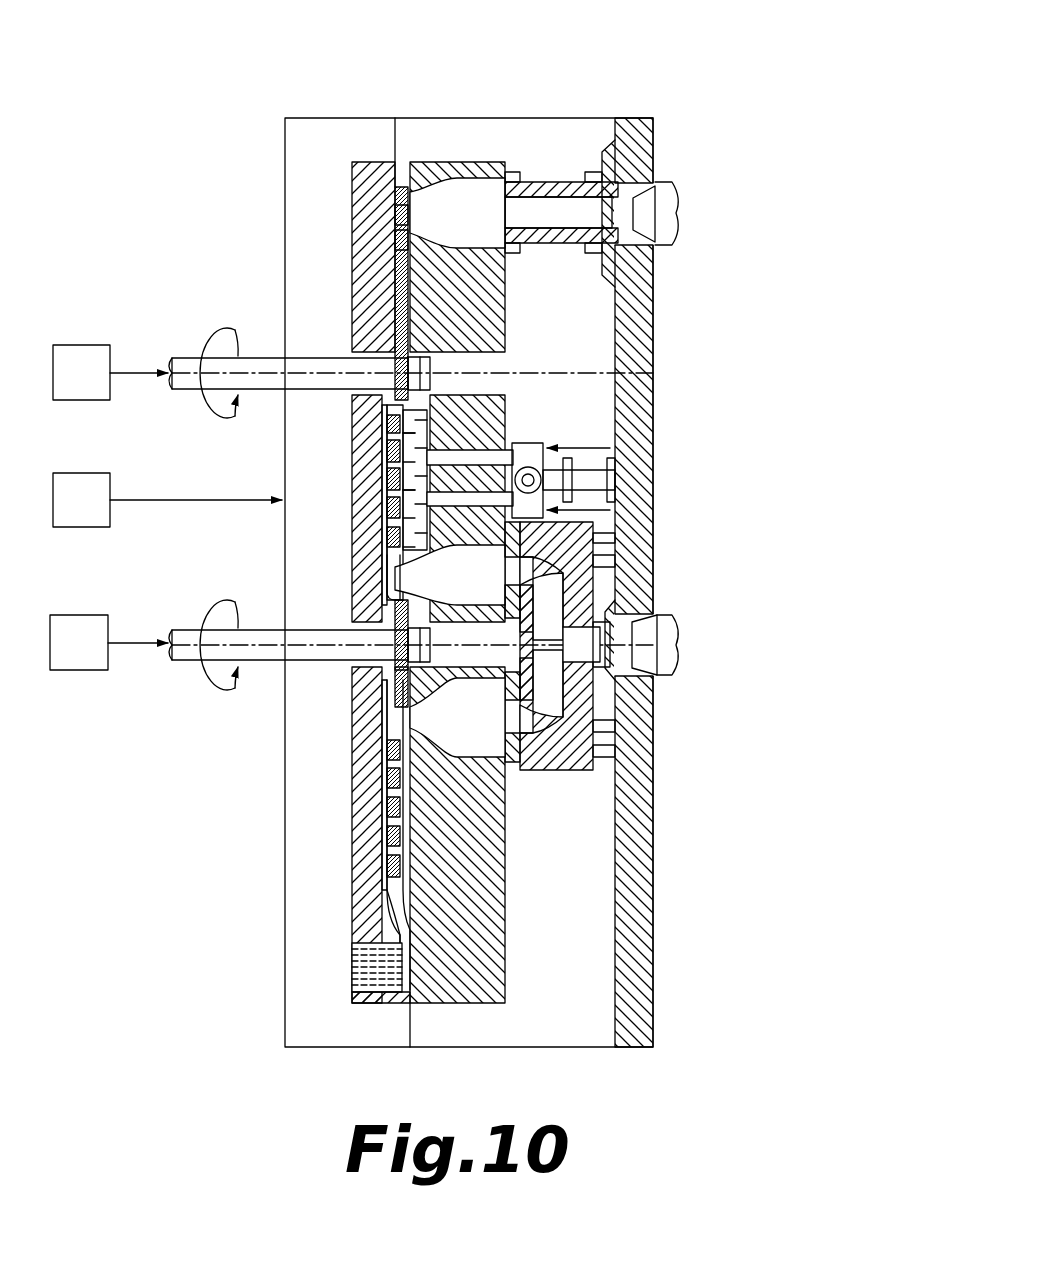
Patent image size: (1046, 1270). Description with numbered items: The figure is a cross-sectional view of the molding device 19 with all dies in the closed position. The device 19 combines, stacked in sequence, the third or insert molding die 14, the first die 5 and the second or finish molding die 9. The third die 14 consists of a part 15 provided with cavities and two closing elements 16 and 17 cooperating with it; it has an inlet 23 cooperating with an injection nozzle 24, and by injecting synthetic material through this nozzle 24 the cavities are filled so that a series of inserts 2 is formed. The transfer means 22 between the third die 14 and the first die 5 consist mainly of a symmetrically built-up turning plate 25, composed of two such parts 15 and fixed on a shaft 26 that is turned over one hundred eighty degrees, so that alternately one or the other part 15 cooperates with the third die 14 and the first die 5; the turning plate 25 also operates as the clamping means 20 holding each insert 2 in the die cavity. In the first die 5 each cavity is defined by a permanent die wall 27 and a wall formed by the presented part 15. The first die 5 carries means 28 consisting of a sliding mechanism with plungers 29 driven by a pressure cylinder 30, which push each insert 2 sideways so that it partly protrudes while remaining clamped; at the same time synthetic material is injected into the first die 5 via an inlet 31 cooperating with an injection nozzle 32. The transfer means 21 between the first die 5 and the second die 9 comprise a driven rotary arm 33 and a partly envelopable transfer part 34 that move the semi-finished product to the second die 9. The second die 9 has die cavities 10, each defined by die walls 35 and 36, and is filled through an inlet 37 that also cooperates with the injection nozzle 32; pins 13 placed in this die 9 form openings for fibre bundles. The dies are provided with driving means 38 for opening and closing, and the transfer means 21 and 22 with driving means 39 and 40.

The insert 2 is at (398, 214).
The first die 5 is at (442, 505).
The second die 9 is at (363, 882).
The die cavity 10 is at (383, 707).
The pins 13 is at (375, 995).
The third die 14 is at (439, 232).
The part 15 is at (403, 200).
The closing element 16 is at (365, 262).
The closing element 17 is at (465, 272).
The molding device 19 is at (613, 85).
The clamping means 20 is at (418, 425).
The transfer means 21 is at (250, 622).
The transfer means 22 is at (251, 345).
The inlet 23 is at (551, 205).
The injection nozzle 24 is at (672, 200).
The turning plate 25 is at (392, 238).
The shaft 26 is at (255, 388).
The die wall 27 is at (382, 568).
The means to push inserts 28 is at (556, 432).
The plungers 29 is at (380, 465).
The pressure cylinder 30 is at (595, 487).
The inlet 31 is at (480, 570).
The injection nozzle 32 is at (672, 630).
The rotary arm 33 is at (398, 662).
The transfer part 34 is at (398, 605).
The die wall 35 is at (385, 700).
The die wall 36 is at (390, 905).
The inlet 37 is at (475, 720).
The driving means 38 is at (82, 527).
The driving means 39 is at (80, 680).
The driving means 40 is at (82, 400).